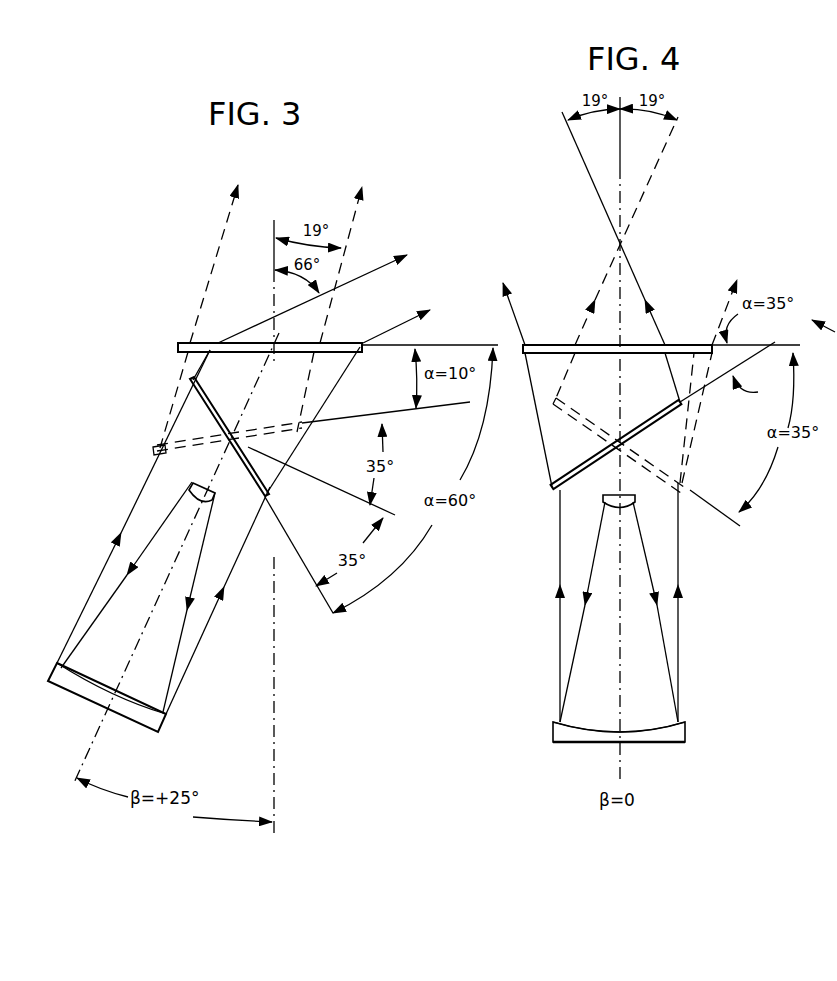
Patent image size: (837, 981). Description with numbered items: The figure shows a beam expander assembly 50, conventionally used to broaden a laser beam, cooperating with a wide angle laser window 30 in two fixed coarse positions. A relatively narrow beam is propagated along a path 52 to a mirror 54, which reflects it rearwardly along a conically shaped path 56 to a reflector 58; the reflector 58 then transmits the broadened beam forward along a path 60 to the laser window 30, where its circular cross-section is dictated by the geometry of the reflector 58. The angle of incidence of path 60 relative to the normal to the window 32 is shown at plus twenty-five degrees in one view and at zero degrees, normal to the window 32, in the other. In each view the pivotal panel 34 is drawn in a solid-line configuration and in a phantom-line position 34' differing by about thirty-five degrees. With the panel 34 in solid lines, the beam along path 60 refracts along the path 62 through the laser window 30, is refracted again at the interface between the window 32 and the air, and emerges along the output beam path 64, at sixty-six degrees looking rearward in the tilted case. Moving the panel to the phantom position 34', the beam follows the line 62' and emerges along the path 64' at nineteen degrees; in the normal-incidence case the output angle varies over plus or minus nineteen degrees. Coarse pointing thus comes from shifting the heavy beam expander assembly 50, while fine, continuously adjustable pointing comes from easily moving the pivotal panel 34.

In FIG. 3, the laser window 30 is at (258, 436).
In FIG. 4, the laser window 30 is at (633, 444).
In FIG. 3, the window 32 is at (207, 342).
In FIG. 4, the window 32 is at (680, 345).
In FIG. 3, the pivotal panel 34 is at (195, 436).
In FIG. 4, the pivotal panel 34 is at (663, 415).
In FIG. 3, the pivotal panel in phantom position 34' is at (282, 430).
In FIG. 4, the pivotal panel in phantom position 34' is at (646, 472).
In FIG. 3, the beam expander assembly 50 is at (144, 559).
In FIG. 4, the beam expander assembly 50 is at (634, 632).
In FIG. 3, the path 52 is at (138, 716).
In FIG. 4, the path 52 is at (653, 751).
In FIG. 3, the mirror 54 is at (193, 483).
In FIG. 4, the mirror 54 is at (607, 500).
In FIG. 3, the conically shaped path 56 is at (163, 522).
In FIG. 4, the conically shaped path 56 is at (667, 640).
In FIG. 3, the reflector 58 is at (162, 720).
In FIG. 4, the reflector 58 is at (683, 728).
In FIG. 3, the path 60 is at (242, 540).
In FIG. 4, the path 60 is at (557, 574).
In FIG. 3, the path 62 is at (170, 365).
In FIG. 4, the path 62 is at (602, 420).
In FIG. 3, the line 62' is at (260, 420).
In FIG. 4, the line 62' is at (634, 418).
In FIG. 3, the output beam path 64 is at (327, 299).
In FIG. 4, the output beam path 64 is at (670, 228).
In FIG. 3, the path 64' is at (263, 264).
In FIG. 4, the path 64' is at (656, 231).